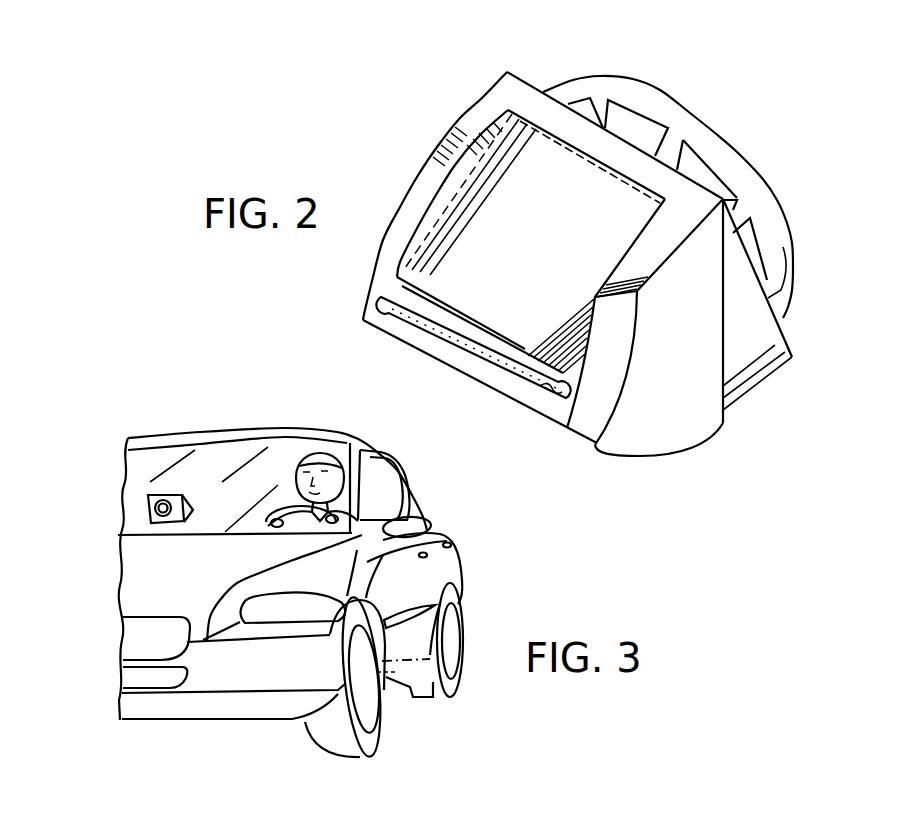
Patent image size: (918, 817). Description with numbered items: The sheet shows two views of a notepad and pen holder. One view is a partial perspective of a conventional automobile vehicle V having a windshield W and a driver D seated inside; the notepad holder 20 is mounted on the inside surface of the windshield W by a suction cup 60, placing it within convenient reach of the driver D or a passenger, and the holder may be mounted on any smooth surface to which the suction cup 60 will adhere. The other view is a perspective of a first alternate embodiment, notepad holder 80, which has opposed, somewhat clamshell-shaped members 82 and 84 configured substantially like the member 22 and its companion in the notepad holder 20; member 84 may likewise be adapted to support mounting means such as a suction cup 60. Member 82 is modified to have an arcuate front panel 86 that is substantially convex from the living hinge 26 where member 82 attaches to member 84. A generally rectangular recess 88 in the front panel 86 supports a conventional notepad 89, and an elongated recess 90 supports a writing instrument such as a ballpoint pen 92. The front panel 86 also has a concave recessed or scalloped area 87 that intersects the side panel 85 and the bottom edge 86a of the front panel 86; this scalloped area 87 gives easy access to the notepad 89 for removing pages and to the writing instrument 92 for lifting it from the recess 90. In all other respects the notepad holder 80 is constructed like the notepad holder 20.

In FIG. 3, the notepad holder 20 is at (134, 507).
In FIG. 2, the member 22 is at (368, 2).
In FIG. 2, the living hinge 26 is at (522, 76).
In FIG. 2, the suction cup 60 is at (601, 72).
In FIG. 3, the suction cup 60 is at (158, 528).
In FIG. 2, the notepad holder 80 is at (462, 92).
In FIG. 2, the member 82 is at (706, 462).
In FIG. 2, the member 84 is at (805, 349).
In FIG. 2, the side panel 85 is at (690, 352).
In FIG. 2, the front panel 86 is at (400, 192).
In FIG. 2, the bottom edge 86a is at (383, 326).
In FIG. 2, the concave recessed area 87 is at (590, 378).
In FIG. 2, the rectangular recess 88 is at (535, 249).
In FIG. 2, the notepad 89 is at (398, 272).
In FIG. 2, the elongated recess 90 is at (430, 330).
In FIG. 2, the ballpoint pen 92 is at (503, 380).
In FIG. 3, the windshield W is at (237, 458).
In FIG. 3, the driver D is at (383, 483).
In FIG. 3, the automobile vehicle V is at (487, 553).